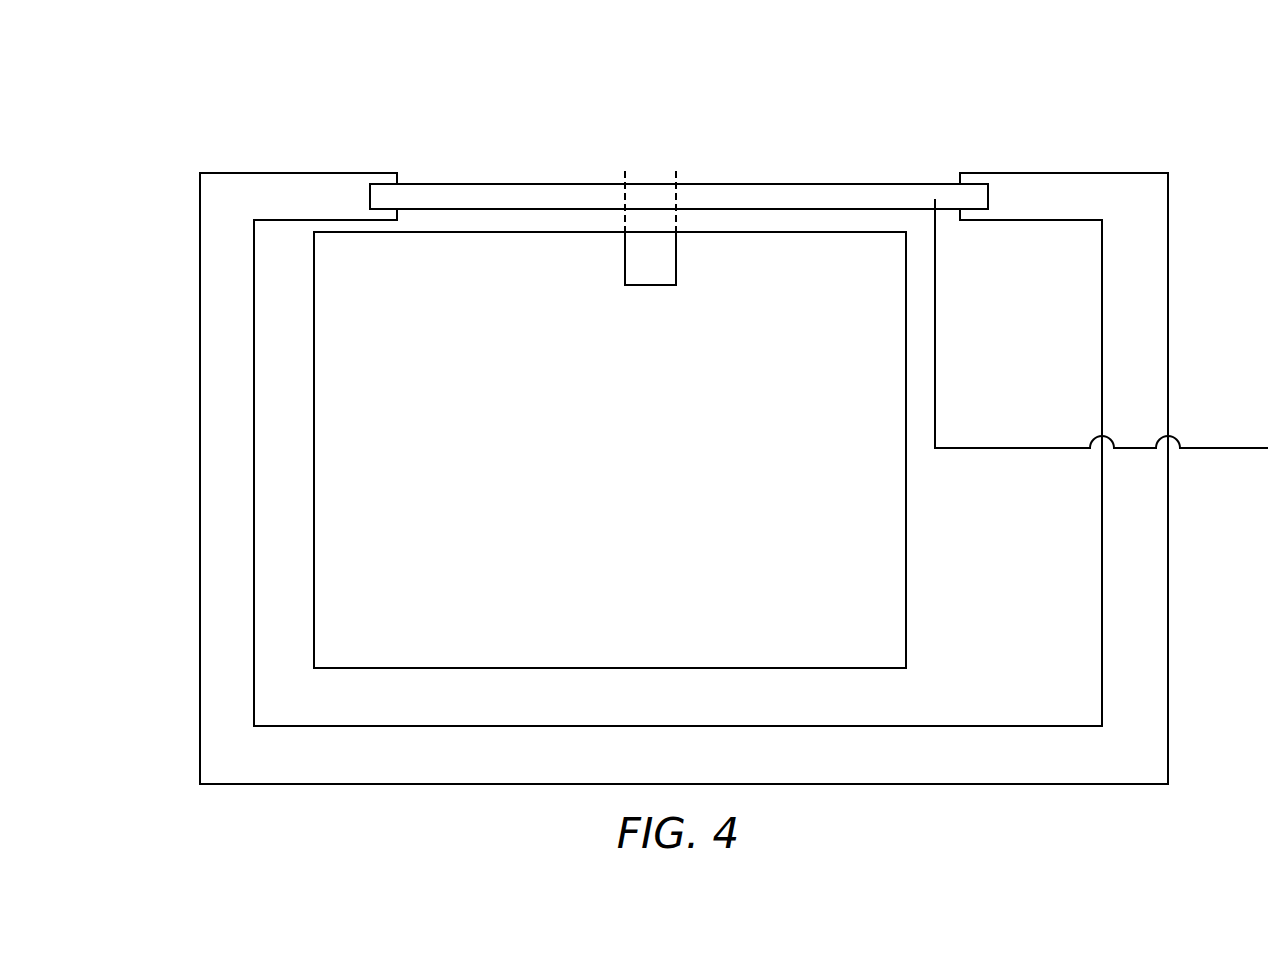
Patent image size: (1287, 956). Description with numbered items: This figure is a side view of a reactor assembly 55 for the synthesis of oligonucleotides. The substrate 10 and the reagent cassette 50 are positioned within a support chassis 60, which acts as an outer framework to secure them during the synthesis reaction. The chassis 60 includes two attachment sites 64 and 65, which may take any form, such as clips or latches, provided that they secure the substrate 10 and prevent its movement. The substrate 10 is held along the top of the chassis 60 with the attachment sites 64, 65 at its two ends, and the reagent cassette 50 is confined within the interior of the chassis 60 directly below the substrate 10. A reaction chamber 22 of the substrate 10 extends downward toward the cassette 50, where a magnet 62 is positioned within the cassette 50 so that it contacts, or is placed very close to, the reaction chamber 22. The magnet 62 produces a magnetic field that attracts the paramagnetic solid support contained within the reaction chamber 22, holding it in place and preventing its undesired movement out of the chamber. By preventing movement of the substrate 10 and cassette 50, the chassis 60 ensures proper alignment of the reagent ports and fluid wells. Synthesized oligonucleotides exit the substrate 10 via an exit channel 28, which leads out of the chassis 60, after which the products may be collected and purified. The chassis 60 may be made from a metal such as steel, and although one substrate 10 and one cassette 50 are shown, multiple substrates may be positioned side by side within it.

The reactor assembly 55 is at (669, 413).
The attachment site 65 is at (397, 180).
The reaction chamber 22 is at (648, 195).
The substrate 10 is at (800, 195).
The exit channel 28 is at (927, 196).
The attachment site 64 is at (977, 184).
The magnet 62 is at (662, 272).
The reagent cassette 50 is at (610, 491).
The support chassis 60 is at (1135, 553).